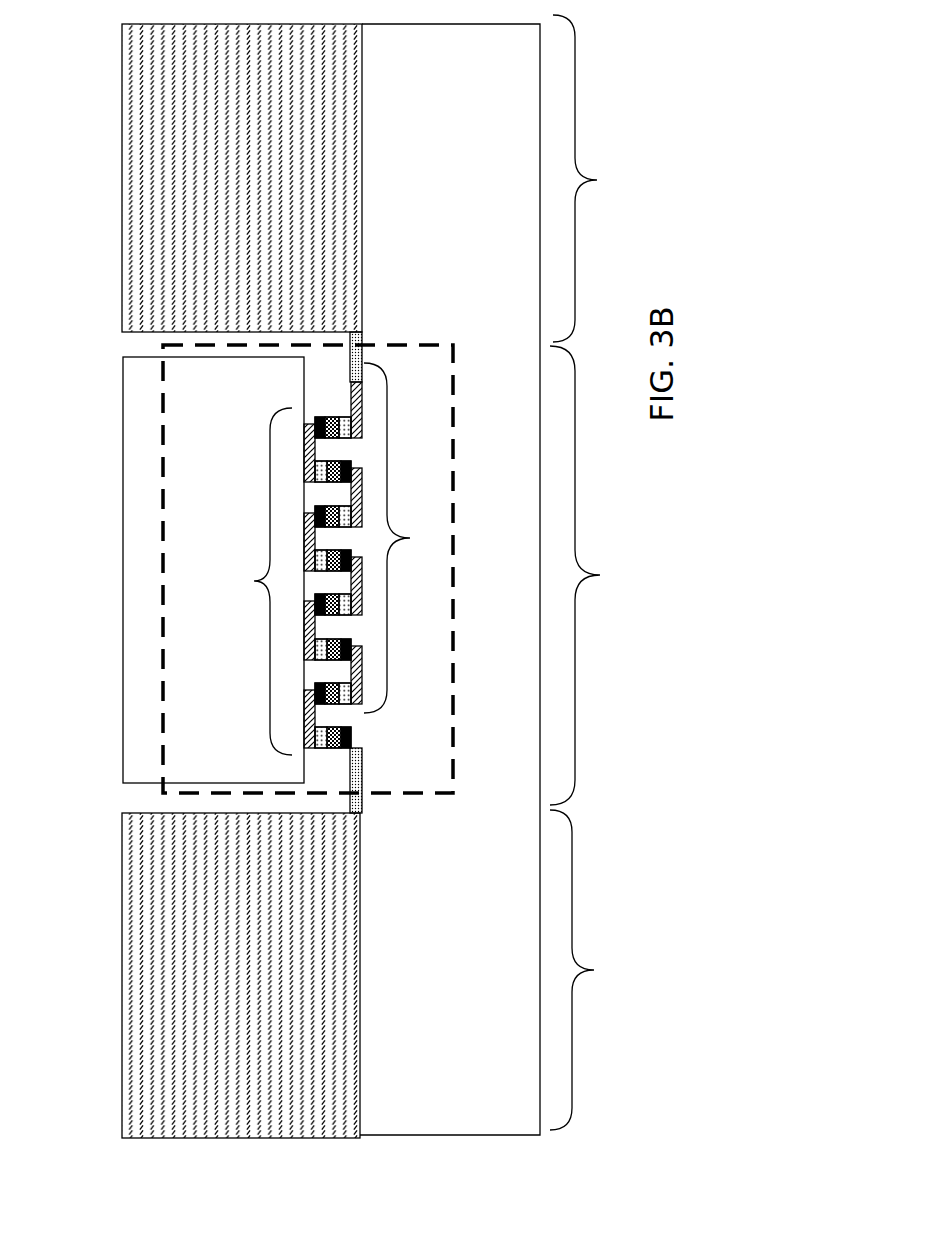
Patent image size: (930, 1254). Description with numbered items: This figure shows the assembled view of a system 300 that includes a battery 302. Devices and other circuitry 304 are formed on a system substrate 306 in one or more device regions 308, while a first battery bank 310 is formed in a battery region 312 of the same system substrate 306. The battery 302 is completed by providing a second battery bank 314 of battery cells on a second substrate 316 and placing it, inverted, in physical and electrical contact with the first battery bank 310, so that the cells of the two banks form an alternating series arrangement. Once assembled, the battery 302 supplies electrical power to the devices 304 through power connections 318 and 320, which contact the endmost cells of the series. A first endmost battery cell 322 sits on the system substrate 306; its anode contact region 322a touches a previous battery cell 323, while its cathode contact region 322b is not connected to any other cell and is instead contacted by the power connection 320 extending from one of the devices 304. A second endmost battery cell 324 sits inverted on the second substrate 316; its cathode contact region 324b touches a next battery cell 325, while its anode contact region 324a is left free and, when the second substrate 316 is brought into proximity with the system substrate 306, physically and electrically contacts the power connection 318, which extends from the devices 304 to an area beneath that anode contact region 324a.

The system 300 is at (740, 337).
The battery 302 is at (80, 755).
The devices and other circuitry 304 is at (100, 173).
The system substrate 306 is at (450, 579).
The device regions 308 is at (590, 572).
The first battery bank 310 is at (380, 538).
The battery region 312 is at (590, 575).
The second battery bank 314 is at (251, 581).
The second substrate 316 is at (213, 570).
The power connection 318 is at (363, 805).
The power connection 320 is at (355, 332).
The first endmost battery cell 322 is at (357, 402).
The anode contact region 322a is at (313, 421).
The cathode contact region 322b is at (345, 396).
The previous battery cell 323 is at (292, 477).
The second endmost battery cell 324 is at (287, 735).
The anode contact region 324a is at (353, 732).
The cathode contact region 324b is at (300, 700).
The next battery cell 325 is at (368, 677).